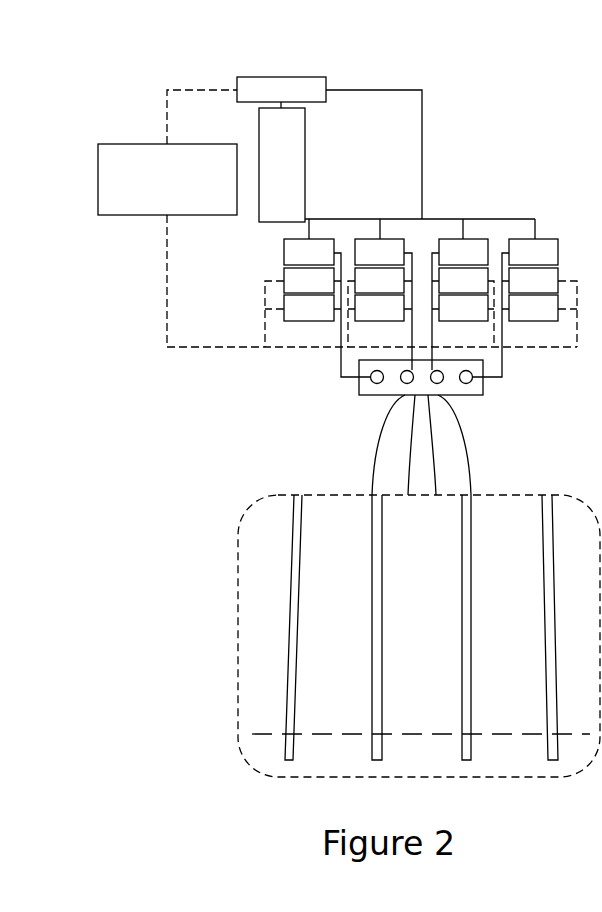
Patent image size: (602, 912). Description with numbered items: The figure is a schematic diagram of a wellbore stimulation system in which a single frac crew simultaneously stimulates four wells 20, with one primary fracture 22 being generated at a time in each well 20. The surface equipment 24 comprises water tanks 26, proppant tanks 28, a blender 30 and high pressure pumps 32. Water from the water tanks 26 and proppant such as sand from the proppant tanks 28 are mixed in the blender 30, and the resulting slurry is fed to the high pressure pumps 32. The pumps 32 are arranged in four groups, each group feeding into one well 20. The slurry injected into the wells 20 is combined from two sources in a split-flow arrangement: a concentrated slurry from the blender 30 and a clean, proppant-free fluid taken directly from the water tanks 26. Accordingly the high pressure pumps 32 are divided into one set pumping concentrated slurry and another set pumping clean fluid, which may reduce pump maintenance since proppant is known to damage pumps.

The well 20 is at (283, 752).
The primary fracture 22 is at (269, 733).
The surface equipment 24 is at (130, 78).
The water tanks 26 is at (97, 182).
The proppant tanks 28 is at (259, 220).
The blender 30 is at (276, 77).
The high pressure pumps 32 is at (548, 239).